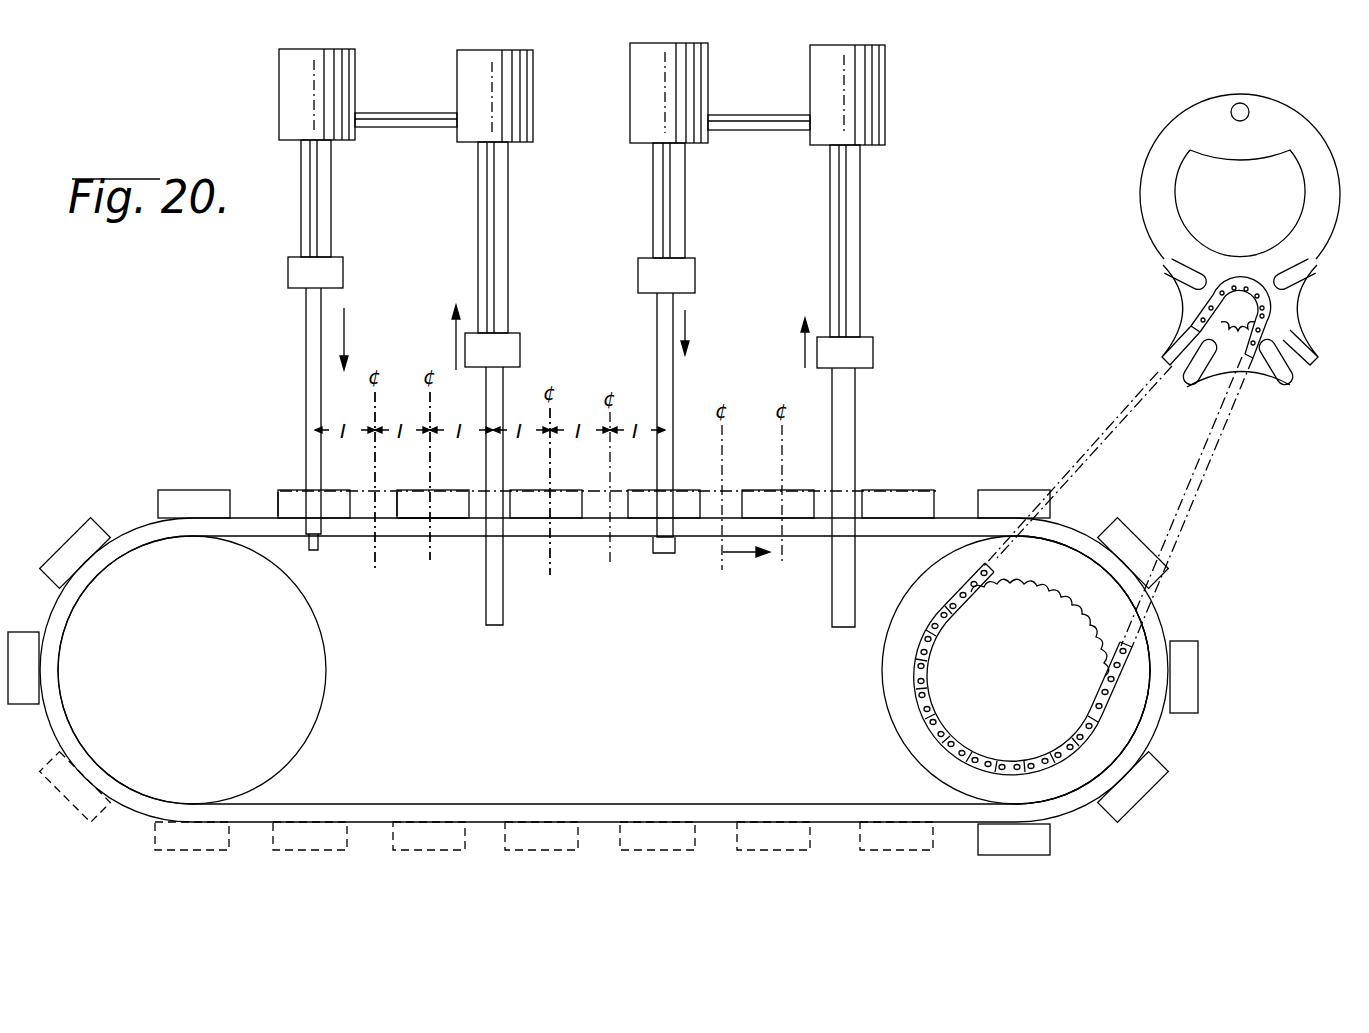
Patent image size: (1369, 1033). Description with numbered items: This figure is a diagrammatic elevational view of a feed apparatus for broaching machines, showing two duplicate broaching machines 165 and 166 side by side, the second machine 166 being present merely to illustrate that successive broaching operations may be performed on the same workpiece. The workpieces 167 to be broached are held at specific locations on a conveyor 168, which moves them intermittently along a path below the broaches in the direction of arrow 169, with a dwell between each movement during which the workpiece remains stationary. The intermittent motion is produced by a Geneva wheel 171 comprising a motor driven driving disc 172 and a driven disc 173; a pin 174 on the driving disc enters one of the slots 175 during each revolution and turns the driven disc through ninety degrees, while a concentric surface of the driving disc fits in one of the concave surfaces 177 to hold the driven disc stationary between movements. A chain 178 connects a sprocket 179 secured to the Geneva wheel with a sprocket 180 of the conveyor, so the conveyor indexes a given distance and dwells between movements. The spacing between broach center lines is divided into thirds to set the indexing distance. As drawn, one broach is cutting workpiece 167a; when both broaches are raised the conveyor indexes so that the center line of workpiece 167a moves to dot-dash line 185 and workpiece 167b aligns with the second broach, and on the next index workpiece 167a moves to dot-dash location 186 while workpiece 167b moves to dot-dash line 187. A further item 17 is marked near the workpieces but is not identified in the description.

The article 17 is at (432, 562).
The broaching machine 165 is at (406, 127).
The broaching machine 166 is at (752, 128).
The workpieces 167 is at (188, 488).
The workpiece 167a is at (292, 510).
The workpiece 167b is at (448, 512).
The conveyor 168 is at (1190, 620).
The arrow 169 is at (745, 556).
The Geneva wheel 171 is at (1176, 353).
The driving disc 172 is at (1158, 146).
The driven disc 173 is at (1302, 352).
The pin 174 is at (1246, 108).
The slots 175 is at (1297, 372).
The concave surfaces 177 is at (1181, 320).
The chain 178 is at (1228, 402).
The sprocket 179 is at (1231, 302).
The sprocket 180 is at (980, 718).
The dot-dash line 185 is at (373, 562).
The dot-dash location 186 is at (426, 572).
The dot-dash line 187 is at (550, 573).